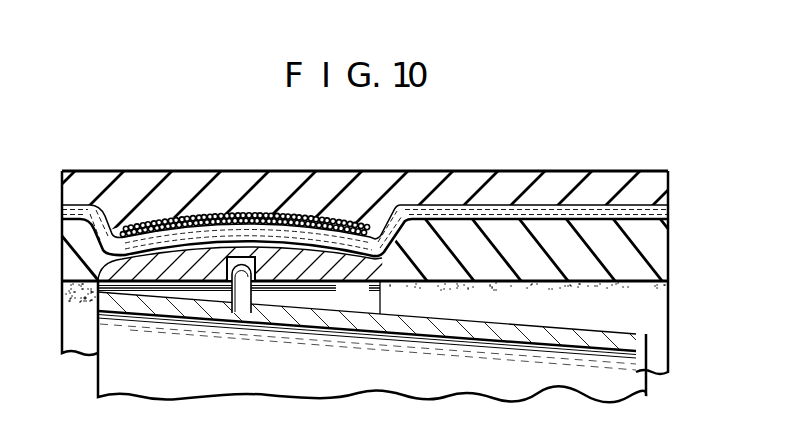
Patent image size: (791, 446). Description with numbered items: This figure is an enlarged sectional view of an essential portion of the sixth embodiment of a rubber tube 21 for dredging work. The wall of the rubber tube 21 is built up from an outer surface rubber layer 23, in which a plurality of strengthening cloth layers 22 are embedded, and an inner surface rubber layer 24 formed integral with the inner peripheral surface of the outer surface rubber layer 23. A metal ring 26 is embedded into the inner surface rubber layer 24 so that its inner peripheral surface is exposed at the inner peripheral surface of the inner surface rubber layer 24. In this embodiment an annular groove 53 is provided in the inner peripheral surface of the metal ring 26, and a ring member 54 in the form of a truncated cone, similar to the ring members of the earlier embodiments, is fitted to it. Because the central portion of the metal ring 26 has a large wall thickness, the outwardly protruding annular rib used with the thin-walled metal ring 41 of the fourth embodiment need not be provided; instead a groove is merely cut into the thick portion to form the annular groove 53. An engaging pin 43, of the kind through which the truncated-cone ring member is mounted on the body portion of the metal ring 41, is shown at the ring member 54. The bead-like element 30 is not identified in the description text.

The rubber tube 21 is at (124, 170).
The strengthening cloth layers 22 is at (666, 211).
The outer surface rubber layer 23 is at (456, 186).
The inner surface rubber layer 24 is at (652, 263).
The metal ring 26 is at (333, 267).
The beaded coil member 30 is at (236, 212).
The metal ring 41 is at (88, 292).
The engaging pin 43 is at (243, 313).
The annular groove 53 is at (256, 262).
The ring member 54 is at (385, 322).